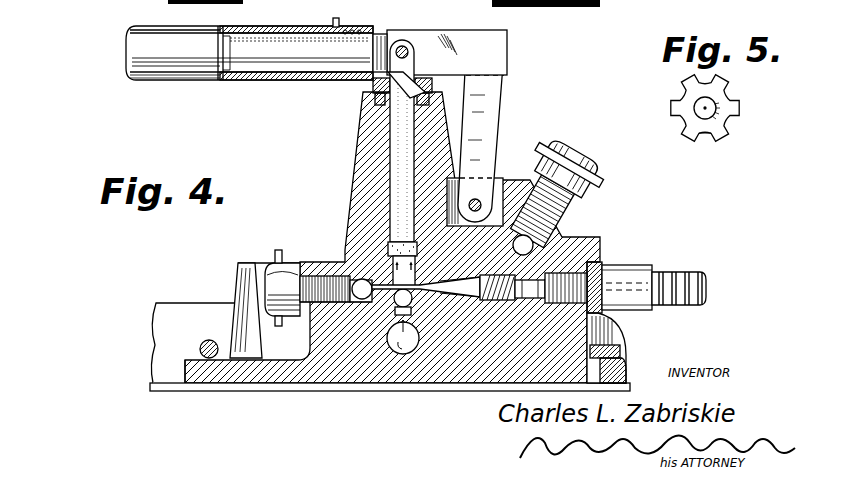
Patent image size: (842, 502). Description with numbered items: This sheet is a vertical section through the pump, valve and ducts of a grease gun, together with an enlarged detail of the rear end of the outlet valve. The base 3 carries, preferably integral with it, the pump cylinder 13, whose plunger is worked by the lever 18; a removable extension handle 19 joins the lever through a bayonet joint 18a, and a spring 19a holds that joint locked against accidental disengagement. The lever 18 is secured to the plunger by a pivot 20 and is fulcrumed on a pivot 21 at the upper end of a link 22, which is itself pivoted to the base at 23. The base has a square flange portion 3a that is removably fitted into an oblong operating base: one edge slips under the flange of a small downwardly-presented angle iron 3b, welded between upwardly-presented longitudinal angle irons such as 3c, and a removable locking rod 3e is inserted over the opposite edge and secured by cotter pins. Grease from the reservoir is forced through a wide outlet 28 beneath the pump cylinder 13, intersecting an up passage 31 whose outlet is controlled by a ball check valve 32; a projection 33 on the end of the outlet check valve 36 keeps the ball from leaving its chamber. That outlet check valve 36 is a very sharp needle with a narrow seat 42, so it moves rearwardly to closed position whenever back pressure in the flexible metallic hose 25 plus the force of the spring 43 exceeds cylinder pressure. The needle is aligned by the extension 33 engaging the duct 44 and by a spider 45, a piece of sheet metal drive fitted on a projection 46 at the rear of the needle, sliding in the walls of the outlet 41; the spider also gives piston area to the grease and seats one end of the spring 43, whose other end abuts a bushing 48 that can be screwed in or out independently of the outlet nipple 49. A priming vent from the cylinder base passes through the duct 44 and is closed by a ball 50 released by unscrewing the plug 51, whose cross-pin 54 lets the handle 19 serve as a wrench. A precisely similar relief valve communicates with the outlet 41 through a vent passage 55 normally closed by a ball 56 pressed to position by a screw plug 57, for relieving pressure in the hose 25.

In FIG. 4, the base 3 is at (320, 347).
In FIG. 4, the square flange portion 3a is at (690, 362).
In FIG. 4, the downwardly-presented angle iron 3b is at (616, 353).
In FIG. 4, the upwardly-presented angle iron 3c is at (172, 325).
In FIG. 4, the removable locking rod 3e is at (237, 330).
In FIG. 4, the pump cylinder 13 is at (398, 285).
In FIG. 4, the lever 18 is at (278, 80).
In FIG. 4, the bayonet joint 18a is at (340, 27).
In FIG. 4, the extension handle 19 is at (148, 46).
In FIG. 4, the spring 19a is at (368, 78).
In FIG. 4, the pivot 20 is at (404, 47).
In FIG. 4, the pivot 21 is at (492, 52).
In FIG. 4, the link 22 is at (495, 105).
In FIG. 4, the pivot 23 is at (478, 200).
In FIG. 4, the flexible metallic hose 25 is at (662, 280).
In FIG. 4, the outlet 28 is at (385, 305).
In FIG. 4, the up passage 31 is at (418, 410).
In FIG. 4, the ball check valve 32 is at (420, 347).
In FIG. 4, the projection 33 is at (396, 270).
In FIG. 4, the outlet check valve 36 is at (470, 300).
In FIG. 5, the outlet check valve 36 is at (722, 102).
In FIG. 4, the outlet 41 is at (497, 188).
In FIG. 4, the seat 42 is at (402, 255).
In FIG. 4, the spring 43 is at (498, 346).
In FIG. 4, the duct 44 is at (370, 302).
In FIG. 4, the spider 45 is at (498, 360).
In FIG. 5, the spider 45 is at (697, 135).
In FIG. 5, the projection 46 is at (712, 118).
In FIG. 4, the bushing 48 is at (590, 300).
In FIG. 4, the outlet nipple 49 is at (642, 310).
In FIG. 4, the ball 50 is at (330, 304).
In FIG. 4, the plug 51 is at (312, 300).
In FIG. 4, the cross-pin 54 is at (275, 258).
In FIG. 4, the vent passage 55 is at (577, 293).
In FIG. 4, the ball 56 is at (538, 242).
In FIG. 4, the screw plug 57 is at (566, 170).